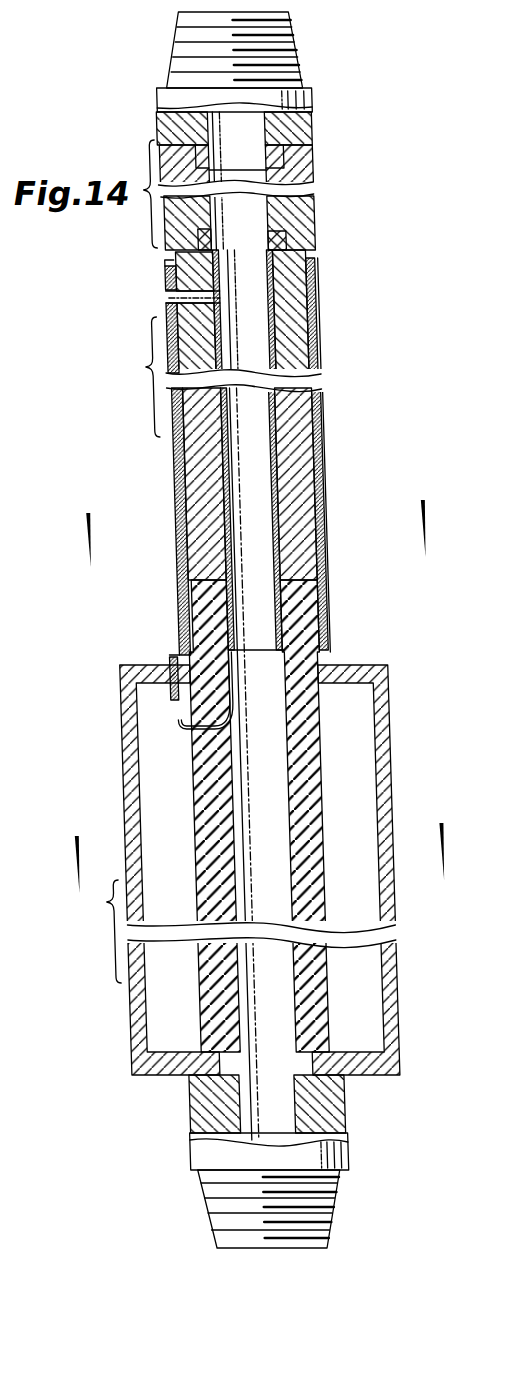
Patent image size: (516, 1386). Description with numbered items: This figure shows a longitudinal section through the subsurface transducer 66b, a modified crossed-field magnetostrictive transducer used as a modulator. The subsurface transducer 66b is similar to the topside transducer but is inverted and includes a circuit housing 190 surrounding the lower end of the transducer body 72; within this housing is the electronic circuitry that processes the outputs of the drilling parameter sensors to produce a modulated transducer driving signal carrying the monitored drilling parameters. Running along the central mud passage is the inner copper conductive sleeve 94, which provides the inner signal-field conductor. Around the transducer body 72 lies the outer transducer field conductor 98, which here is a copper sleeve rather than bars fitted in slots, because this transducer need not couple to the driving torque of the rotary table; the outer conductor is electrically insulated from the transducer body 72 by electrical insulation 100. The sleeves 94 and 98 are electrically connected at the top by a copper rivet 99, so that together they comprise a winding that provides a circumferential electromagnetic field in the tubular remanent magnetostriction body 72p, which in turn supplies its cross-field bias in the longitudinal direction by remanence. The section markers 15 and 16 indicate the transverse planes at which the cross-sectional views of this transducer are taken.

The subsurface transducer 66b is at (381, 366).
The copper rivet 99 is at (162, 277).
The inner copper conductive sleeve 94 is at (252, 398).
The outer transducer field conductor 98 is at (310, 463).
The electrical insulation 100 is at (298, 510).
The transducer body 72 is at (297, 556).
The remanent magnetostriction body 72p is at (183, 548).
The circuit housing 190 is at (368, 734).
The section line 15- 15 is at (89, 511).
The section line 16- 16 is at (71, 833).